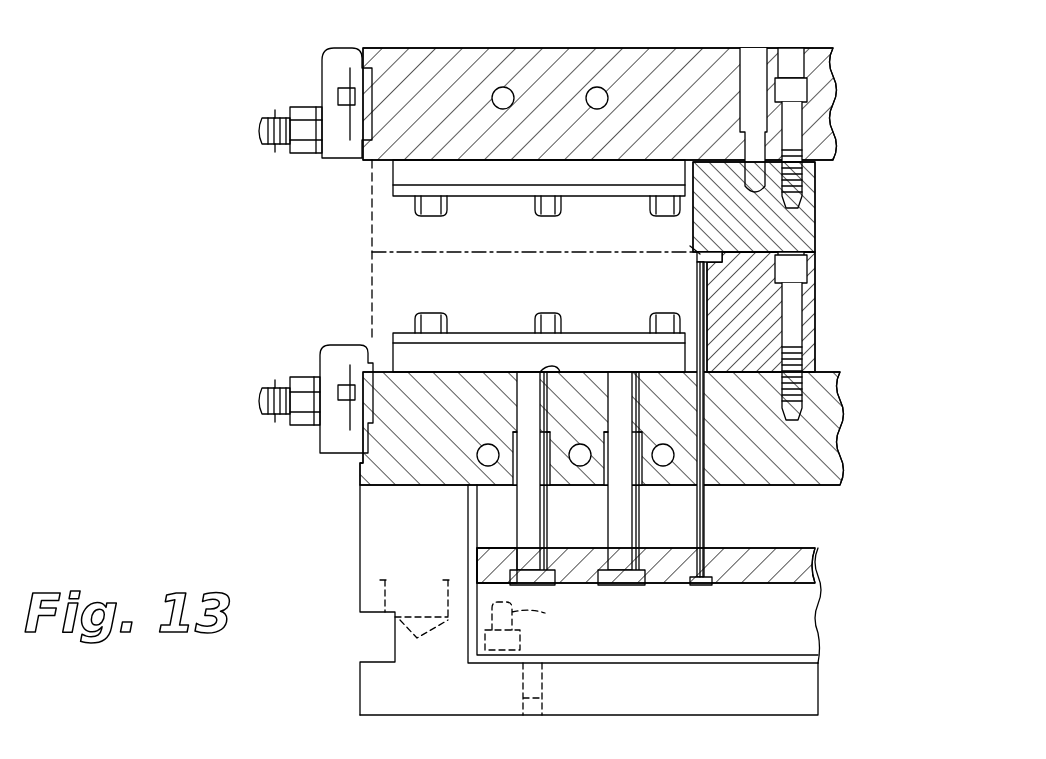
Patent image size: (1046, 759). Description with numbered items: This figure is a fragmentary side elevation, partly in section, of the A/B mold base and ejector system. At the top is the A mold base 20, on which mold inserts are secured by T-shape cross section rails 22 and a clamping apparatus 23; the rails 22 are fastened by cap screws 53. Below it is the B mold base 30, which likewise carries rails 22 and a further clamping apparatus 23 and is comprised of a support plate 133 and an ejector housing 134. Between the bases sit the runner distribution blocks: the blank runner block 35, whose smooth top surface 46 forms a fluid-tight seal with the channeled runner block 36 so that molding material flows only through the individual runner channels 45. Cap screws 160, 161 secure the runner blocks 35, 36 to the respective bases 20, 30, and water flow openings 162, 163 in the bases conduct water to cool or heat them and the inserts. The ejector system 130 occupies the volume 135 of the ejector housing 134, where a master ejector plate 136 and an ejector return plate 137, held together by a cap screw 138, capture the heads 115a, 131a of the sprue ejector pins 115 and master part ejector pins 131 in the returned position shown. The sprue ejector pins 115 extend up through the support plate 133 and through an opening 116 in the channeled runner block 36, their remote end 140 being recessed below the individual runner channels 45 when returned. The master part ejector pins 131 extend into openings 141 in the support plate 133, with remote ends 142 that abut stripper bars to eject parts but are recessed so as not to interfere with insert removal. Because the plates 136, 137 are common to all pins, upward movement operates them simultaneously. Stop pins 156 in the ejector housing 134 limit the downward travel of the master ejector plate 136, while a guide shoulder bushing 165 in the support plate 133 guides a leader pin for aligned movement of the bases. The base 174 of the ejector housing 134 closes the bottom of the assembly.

The A mold base 20 is at (834, 126).
The rail 22 is at (393, 200).
The clamping apparatus 23 is at (314, 96).
The B mold base 30 is at (850, 412).
The blank runner block 35 is at (816, 232).
The channeled runner block 36 is at (816, 300).
The individual runner channel 45 is at (698, 258).
The top surface of blank runner block 46 is at (697, 252).
The cap screw 53 is at (447, 318).
The sprue ejector pin 115 is at (706, 516).
The head of sprue ejector pin 115a is at (702, 588).
The opening 116 is at (699, 272).
The ejector system 130 is at (466, 518).
The master part ejector pin 131 is at (526, 510).
The head of master part ejector pin 131a is at (615, 580).
The support plate 133 is at (841, 430).
The ejector housing 134 is at (360, 505).
The volume of ejector housing 135 is at (478, 534).
The master ejector plate 136 is at (814, 612).
The ejector return plate 137 is at (812, 550).
The cap screw 138 is at (520, 620).
The remote end of sprue ejector pin 140 is at (702, 284).
The opening in support plate 141 is at (520, 372).
The remote end of master part ejector pin 142 is at (548, 368).
The stop pin 156 is at (544, 666).
The cap screw 160 is at (790, 78).
The cap screw 161 is at (803, 272).
The water flow opening 162 is at (596, 87).
The water flow opening 163 is at (580, 465).
The guide shoulder bushing 165 is at (415, 628).
The base of ejector housing 174 is at (812, 712).